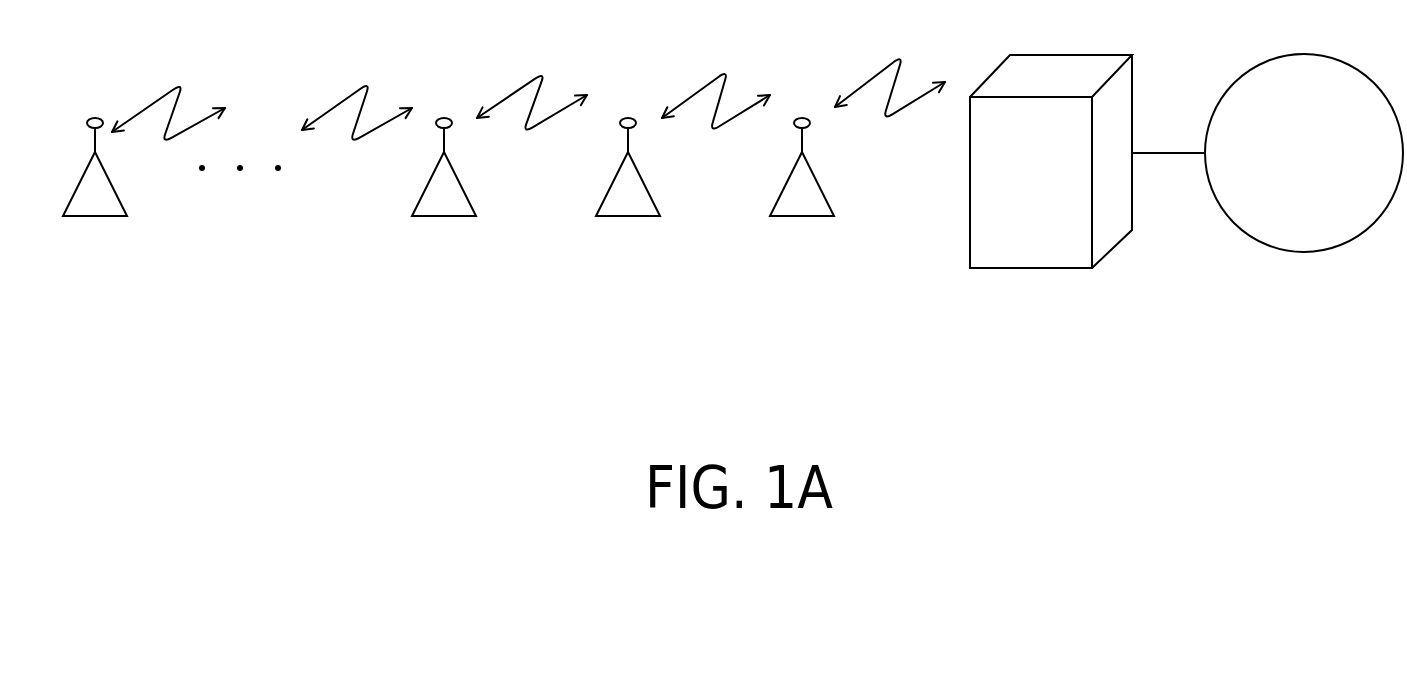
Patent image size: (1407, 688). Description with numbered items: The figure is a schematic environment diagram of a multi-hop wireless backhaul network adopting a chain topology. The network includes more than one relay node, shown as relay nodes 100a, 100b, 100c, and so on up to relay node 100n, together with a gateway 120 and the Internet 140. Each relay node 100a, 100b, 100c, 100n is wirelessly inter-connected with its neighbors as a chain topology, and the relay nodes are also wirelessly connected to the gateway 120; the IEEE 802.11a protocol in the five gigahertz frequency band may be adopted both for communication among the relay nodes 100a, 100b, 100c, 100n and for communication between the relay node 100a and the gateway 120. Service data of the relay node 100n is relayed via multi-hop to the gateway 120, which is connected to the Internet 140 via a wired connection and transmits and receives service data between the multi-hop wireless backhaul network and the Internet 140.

The relay node 100a is at (800, 220).
The relay node 100b is at (626, 220).
The relay node 100c is at (442, 220).
The relay node 100n is at (93, 220).
The gateway 120 is at (1028, 270).
The Internet 140 is at (1303, 254).